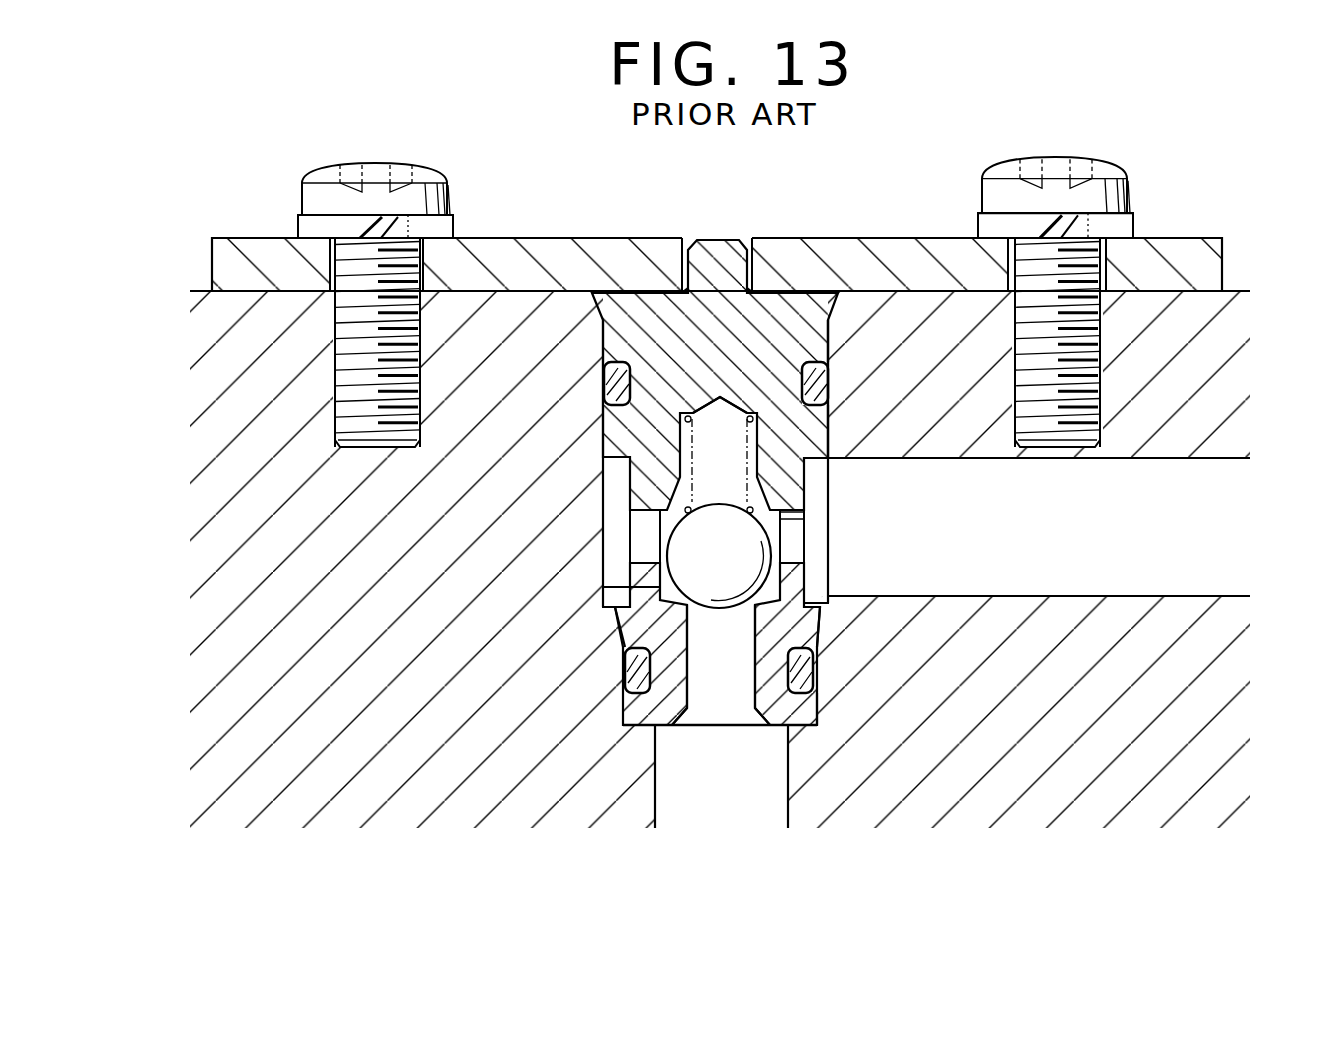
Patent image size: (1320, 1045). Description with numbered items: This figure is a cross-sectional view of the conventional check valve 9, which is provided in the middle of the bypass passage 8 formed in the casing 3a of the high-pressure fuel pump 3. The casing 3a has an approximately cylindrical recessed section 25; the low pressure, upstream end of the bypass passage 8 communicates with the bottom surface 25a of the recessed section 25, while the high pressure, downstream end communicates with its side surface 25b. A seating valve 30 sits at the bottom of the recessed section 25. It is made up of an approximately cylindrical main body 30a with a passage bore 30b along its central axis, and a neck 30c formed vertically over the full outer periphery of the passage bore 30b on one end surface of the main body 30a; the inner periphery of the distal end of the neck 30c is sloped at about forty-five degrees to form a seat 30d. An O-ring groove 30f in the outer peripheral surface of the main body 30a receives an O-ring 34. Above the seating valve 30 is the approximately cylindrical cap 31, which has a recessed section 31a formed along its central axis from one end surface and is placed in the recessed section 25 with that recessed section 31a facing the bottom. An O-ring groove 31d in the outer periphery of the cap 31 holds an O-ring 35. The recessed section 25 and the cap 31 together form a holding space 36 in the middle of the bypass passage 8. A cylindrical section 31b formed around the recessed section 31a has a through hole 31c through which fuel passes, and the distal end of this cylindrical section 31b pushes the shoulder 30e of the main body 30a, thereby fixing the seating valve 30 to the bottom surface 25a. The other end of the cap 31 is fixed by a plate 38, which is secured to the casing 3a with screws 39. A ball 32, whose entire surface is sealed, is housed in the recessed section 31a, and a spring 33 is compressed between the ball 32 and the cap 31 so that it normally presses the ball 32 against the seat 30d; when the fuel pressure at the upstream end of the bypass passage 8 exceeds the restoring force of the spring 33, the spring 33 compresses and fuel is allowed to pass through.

The high-pressure fuel pump 3 is at (744, 511).
The casing 3a is at (1212, 291).
The bypass passage 8 is at (1000, 570).
The check valve 9 is at (705, 238).
The recessed section 25 is at (600, 332).
The bottom surface 25a is at (633, 713).
The side surface 25b is at (830, 418).
The seating valve 30 is at (723, 705).
The main body 30a is at (823, 707).
The passage bore 30b is at (747, 682).
The neck 30c is at (630, 587).
The seat 30d is at (680, 592).
The shoulder 30e is at (618, 604).
The O-ring groove 30f is at (815, 660).
The cap 31 is at (731, 381).
The recessed section 31a is at (738, 443).
The cylindrical section 31b is at (808, 488).
The through hole 31c is at (805, 525).
The O-ring groove 31d is at (828, 362).
The ball 32 is at (703, 438).
The spring 33 is at (705, 408).
The O-ring 34 is at (817, 668).
The O-ring 35 is at (830, 384).
The holding space 36 is at (608, 520).
The plate 38 is at (890, 238).
The screws 39 is at (384, 162).